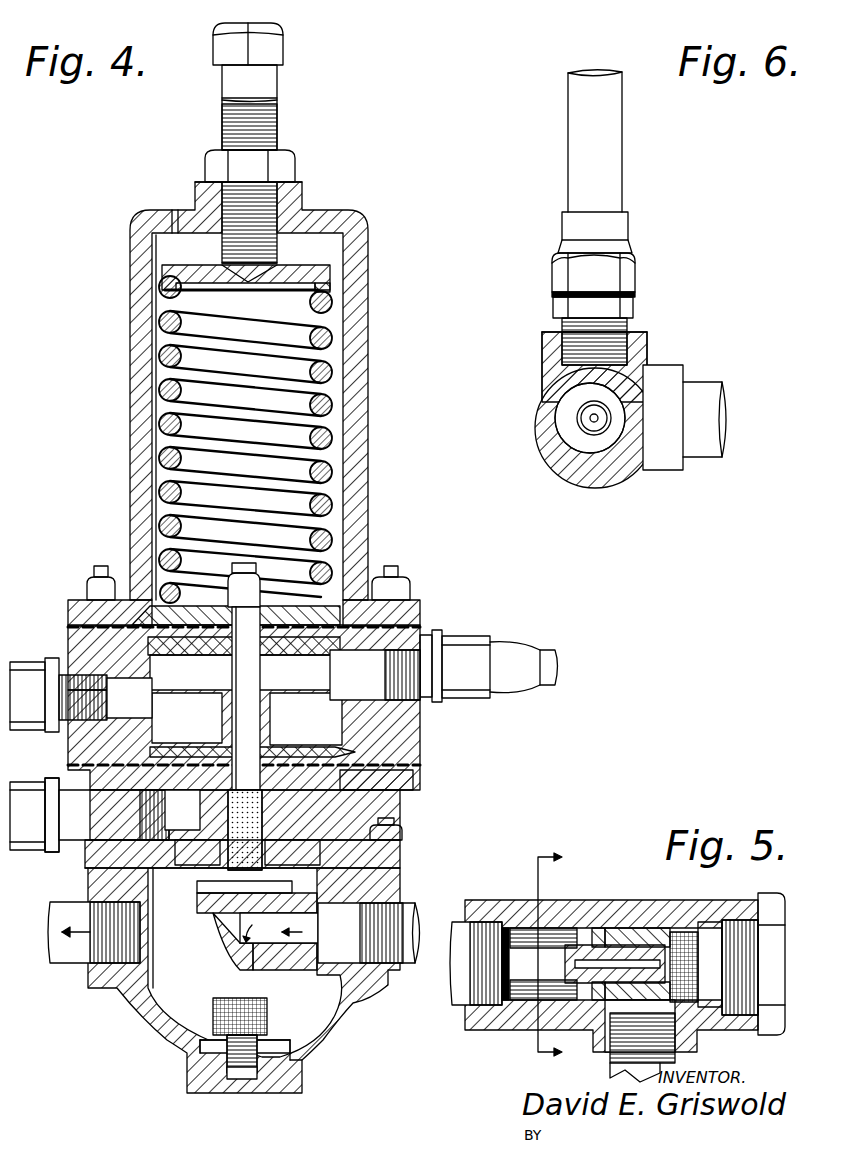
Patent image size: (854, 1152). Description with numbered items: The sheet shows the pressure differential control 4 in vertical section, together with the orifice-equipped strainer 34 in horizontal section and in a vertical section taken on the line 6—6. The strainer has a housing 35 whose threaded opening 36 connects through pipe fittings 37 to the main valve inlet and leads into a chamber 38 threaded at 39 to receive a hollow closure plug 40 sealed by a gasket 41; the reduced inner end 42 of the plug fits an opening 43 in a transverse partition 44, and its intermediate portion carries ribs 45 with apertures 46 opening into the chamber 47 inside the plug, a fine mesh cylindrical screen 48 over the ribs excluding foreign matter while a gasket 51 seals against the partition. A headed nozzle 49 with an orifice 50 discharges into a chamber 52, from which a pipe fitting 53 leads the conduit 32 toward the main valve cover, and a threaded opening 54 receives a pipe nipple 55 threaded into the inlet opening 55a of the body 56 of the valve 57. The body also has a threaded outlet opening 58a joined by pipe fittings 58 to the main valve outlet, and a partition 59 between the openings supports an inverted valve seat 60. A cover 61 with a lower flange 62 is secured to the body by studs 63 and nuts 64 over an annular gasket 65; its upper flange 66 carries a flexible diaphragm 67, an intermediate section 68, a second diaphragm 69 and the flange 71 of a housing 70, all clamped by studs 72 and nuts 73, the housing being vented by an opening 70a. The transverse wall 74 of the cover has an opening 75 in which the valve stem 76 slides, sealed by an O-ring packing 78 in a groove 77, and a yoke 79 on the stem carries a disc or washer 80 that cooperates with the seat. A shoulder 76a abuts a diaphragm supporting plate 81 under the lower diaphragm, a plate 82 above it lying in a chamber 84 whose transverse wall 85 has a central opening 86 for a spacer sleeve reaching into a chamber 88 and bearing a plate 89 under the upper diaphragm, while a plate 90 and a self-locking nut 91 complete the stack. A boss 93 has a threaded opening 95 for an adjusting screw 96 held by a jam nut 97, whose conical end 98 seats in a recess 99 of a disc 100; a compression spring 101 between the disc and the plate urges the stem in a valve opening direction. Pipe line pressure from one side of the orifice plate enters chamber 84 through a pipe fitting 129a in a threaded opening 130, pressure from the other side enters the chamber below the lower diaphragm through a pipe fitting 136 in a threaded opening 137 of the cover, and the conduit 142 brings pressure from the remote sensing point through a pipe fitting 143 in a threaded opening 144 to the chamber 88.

In FIG. 4, the pressure differential control 4 is at (370, 372).
In FIG. 5, the section line 6 is at (557, 955).
In FIG. 6, the conduit 32 is at (612, 158).
In FIG. 5, the orifice-equipped strainer 34 is at (500, 1032).
In FIG. 6, the orifice-equipped strainer 34 is at (645, 365).
In FIG. 5, the strainer housing 35 is at (490, 905).
In FIG. 6, the strainer housing 35 is at (620, 478).
In FIG. 5, the threaded opening 36 is at (690, 1042).
In FIG. 5, the pipe fittings 37 is at (610, 1075).
In FIG. 6, the pipe fittings 37 is at (704, 390).
In FIG. 5, the chamber 38 is at (598, 928).
In FIG. 5, the threaded portion 39 is at (728, 922).
In FIG. 5, the hollow closure plug 40 is at (770, 1035).
In FIG. 5, the gasket 41 is at (757, 920).
In FIG. 5, the reduced inner end 42 is at (512, 935).
In FIG. 5, the opening 43 is at (568, 980).
In FIG. 5, the transverse partition 44 is at (578, 944).
In FIG. 6, the transverse partition 44 is at (566, 426).
In FIG. 5, the outwardly projecting ribs 45 is at (650, 930).
In FIG. 5, the apertures 46 is at (662, 930).
In FIG. 5, the chamber 47 is at (648, 932).
In FIG. 5, the fine mesh cylindrical screen 48 is at (686, 932).
In FIG. 5, the headed nozzle 49 is at (566, 960).
In FIG. 6, the headed nozzle 49 is at (578, 415).
In FIG. 5, the orifice 50 is at (575, 967).
In FIG. 6, the orifice 50 is at (592, 422).
In FIG. 5, the gasket 51 is at (572, 1037).
In FIG. 5, the chamber 52 is at (522, 935).
In FIG. 6, the chamber 52 is at (576, 452).
In FIG. 6, the pipe fitting 53 is at (562, 308).
In FIG. 5, the threaded opening 54 is at (465, 1027).
In FIG. 4, the pipe nipple 55 is at (407, 913).
In FIG. 5, the pipe nipple 55 is at (462, 1008).
In FIG. 4, the inlet opening 55a is at (393, 985).
In FIG. 4, the valve body 56 is at (330, 1033).
In FIG. 4, the valve 57 is at (141, 1033).
In FIG. 4, the pipe fittings 58 is at (73, 950).
In FIG. 4, the threaded outlet opening 58a is at (143, 957).
In FIG. 4, the partition 59 is at (222, 987).
In FIG. 4, the inverted valve seat 60 is at (272, 990).
In FIG. 4, the cover 61 is at (405, 852).
In FIG. 4, the lower flange 62 is at (403, 860).
In FIG. 4, the studs 63 is at (360, 795).
In FIG. 4, the nuts 64 is at (402, 835).
In FIG. 4, the annular gasket 65 is at (86, 873).
In FIG. 4, the flange 66 is at (414, 786).
In FIG. 4, the flexible diaphragm 67 is at (68, 752).
In FIG. 4, the intermediate section 68 is at (420, 635).
In FIG. 4, the diaphragm 69 is at (420, 618).
In FIG. 4, the housing 70 is at (130, 392).
In FIG. 4, the vent opening 70a is at (176, 212).
In FIG. 4, the flange 71 is at (86, 594).
In FIG. 4, the studs 72 is at (100, 566).
In FIG. 4, the nuts 73 is at (108, 577).
In FIG. 4, the transverse wall 74 is at (227, 881).
In FIG. 4, the opening 75 is at (287, 855).
In FIG. 4, the valve stem 76 is at (262, 721).
In FIG. 4, the shoulder 76a is at (247, 794).
In FIG. 4, the groove 77 is at (207, 855).
In FIG. 4, the O-ring packing 78 is at (205, 808).
In FIG. 4, the yoke 79 is at (222, 907).
In FIG. 4, the closure disc 80 is at (222, 997).
In FIG. 4, the diaphragm supporting plate 81 is at (264, 742).
In FIG. 4, the plate 82 is at (215, 740).
In FIG. 4, the chamber 84 is at (177, 702).
In FIG. 4, the transverse wall 85 is at (172, 710).
In FIG. 4, the central opening 86 is at (264, 708).
In FIG. 4, the chamber 88 is at (357, 661).
In FIG. 4, the diaphragm-supporting plate 89 is at (357, 679).
In FIG. 4, the diaphragm-supporting plate 90 is at (400, 596).
In FIG. 4, the self-locking nut 91 is at (228, 598).
In FIG. 4, the boss 93 is at (300, 185).
In FIG. 4, the threaded opening 95 is at (302, 207).
In FIG. 4, the adjusting screw 96 is at (277, 137).
In FIG. 4, the jam nut 97 is at (295, 165).
In FIG. 4, the conical inner end 98 is at (280, 262).
In FIG. 4, the complemental recess 99 is at (330, 287).
In FIG. 4, the centrally disposed disc 100 is at (330, 272).
In FIG. 4, the compression spring 101 is at (322, 440).
In FIG. 4, the pipe fitting 129a is at (70, 631).
In FIG. 4, the threaded opening 130 is at (81, 695).
In FIG. 4, the pipe fitting 136 is at (52, 852).
In FIG. 4, the threaded opening 137 is at (140, 800).
In FIG. 4, the conduit 142 is at (535, 655).
In FIG. 4, the pipe fitting 143 is at (432, 705).
In FIG. 4, the threaded opening 144 is at (421, 738).